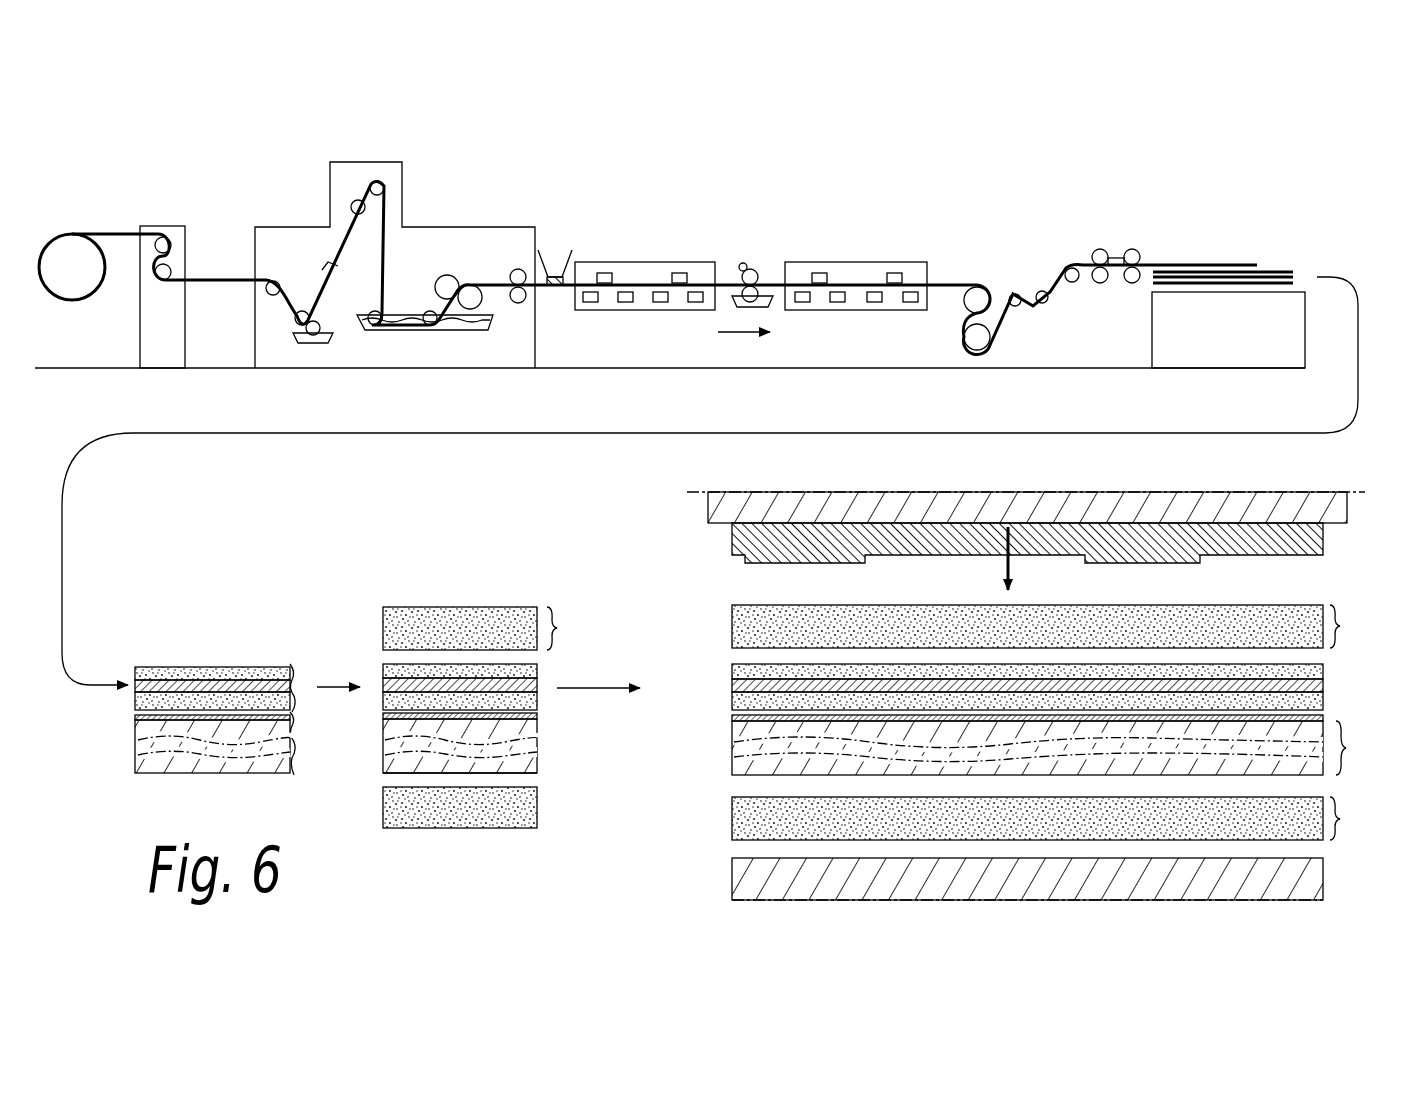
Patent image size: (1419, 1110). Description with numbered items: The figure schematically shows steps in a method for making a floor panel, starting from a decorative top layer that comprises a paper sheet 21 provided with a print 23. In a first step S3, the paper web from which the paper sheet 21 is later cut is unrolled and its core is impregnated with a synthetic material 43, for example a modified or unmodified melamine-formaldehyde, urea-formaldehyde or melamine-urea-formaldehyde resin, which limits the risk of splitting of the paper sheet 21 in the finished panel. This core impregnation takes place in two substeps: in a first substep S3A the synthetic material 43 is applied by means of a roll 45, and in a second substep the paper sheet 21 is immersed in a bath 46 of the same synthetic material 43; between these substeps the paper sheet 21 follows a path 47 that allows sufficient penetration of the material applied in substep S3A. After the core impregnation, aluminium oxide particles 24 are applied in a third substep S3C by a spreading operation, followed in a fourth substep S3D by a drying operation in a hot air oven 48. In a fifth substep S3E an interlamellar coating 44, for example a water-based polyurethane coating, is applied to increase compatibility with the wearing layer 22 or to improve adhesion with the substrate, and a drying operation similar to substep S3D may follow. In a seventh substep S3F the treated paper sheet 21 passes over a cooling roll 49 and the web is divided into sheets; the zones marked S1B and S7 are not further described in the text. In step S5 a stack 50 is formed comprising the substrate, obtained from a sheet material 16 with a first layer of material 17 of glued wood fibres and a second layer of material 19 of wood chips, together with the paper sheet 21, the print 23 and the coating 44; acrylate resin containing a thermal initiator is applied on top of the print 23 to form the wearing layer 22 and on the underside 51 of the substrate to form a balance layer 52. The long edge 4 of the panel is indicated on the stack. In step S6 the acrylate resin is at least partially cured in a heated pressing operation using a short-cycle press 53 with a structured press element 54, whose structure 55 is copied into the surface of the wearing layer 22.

The paper sheet 21 is at (108, 235).
The path 47 is at (353, 188).
The bath 46 is at (405, 300).
The roll 45 is at (290, 332).
The synthetic material 43 is at (330, 345).
The aluminium oxide particles 24 is at (555, 286).
The hot air oven 48 is at (622, 260).
The interlamellar coating 44 is at (740, 307).
The cooling roll 49 is at (978, 333).
The print 23 is at (253, 678).
The long edge 4 is at (303, 687).
The sheet material 16 is at (167, 743).
The second layer of material 19 is at (383, 715).
The stack 50 is at (90, 737).
The wearing layer 22 is at (562, 628).
The balance layer 52 is at (467, 817).
The underside 51 is at (482, 775).
The short-cycle press 53 is at (730, 510).
The press element 54 is at (1273, 540).
The structure 55 is at (950, 577).
The first layer of material 17 is at (1348, 748).
The first step S3 is at (1148, 167).
The first substep S3A is at (306, 290).
The third substep S3C is at (555, 247).
The fourth substep S3D is at (610, 340).
The fifth substep S3E is at (753, 257).
The seventh substep S3F is at (1013, 227).
The step S1B is at (473, 358).
The second step S5 is at (155, 627).
The fourth step S6 is at (392, 583).
The step S7 is at (660, 508).